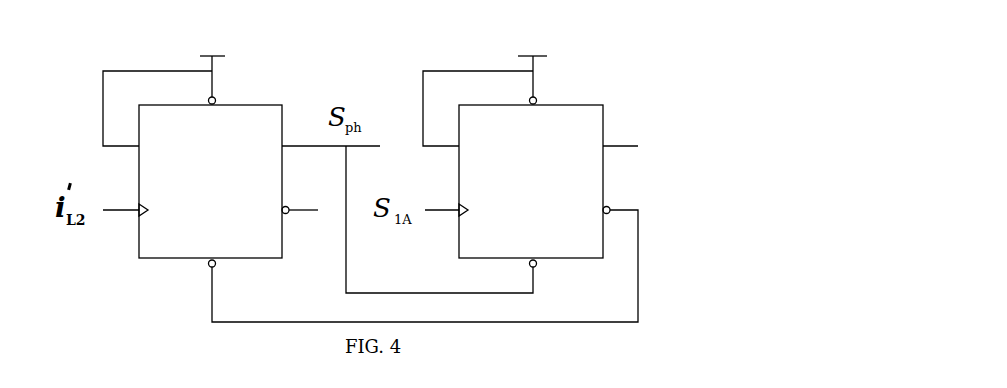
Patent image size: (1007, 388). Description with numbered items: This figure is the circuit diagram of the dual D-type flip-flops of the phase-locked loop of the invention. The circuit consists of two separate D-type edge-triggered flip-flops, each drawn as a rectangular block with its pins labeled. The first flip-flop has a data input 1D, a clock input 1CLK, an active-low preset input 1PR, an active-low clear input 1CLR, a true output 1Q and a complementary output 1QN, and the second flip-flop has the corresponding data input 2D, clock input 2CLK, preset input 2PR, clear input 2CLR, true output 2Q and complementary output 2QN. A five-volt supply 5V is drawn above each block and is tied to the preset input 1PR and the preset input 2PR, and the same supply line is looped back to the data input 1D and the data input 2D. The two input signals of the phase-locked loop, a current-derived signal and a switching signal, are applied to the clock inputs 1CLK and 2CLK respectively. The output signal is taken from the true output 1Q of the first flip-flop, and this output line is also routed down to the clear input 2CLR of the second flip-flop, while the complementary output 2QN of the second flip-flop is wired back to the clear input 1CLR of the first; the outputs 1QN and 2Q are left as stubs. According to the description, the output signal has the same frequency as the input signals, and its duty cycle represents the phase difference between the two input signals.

The 5 V supply 5V is at (373, 68).
The first flip-flop preset input (~1PR) 1PR is at (206, 114).
The first flip-flop D input 1D is at (157, 113).
The first flip-flop Q output 1Q is at (315, 147).
The first flip-flop clock input 1CLK is at (147, 211).
The first flip-flop inverted Q output (~1Q) 1QN is at (280, 211).
The first flip-flop clear input (~1CLR) 1CLR is at (409, 266).
The second flip-flop preset input (~2PR) 2PR is at (525, 114).
The second flip-flop D input 2D is at (478, 113).
The second flip-flop Q output 2Q is at (603, 147).
The second flip-flop clock input 2CLK is at (468, 211).
The second flip-flop inverted Q output (~2Q) 2QN is at (585, 211).
The second flip-flop clear input (~2CLR) 2CLR is at (522, 254).